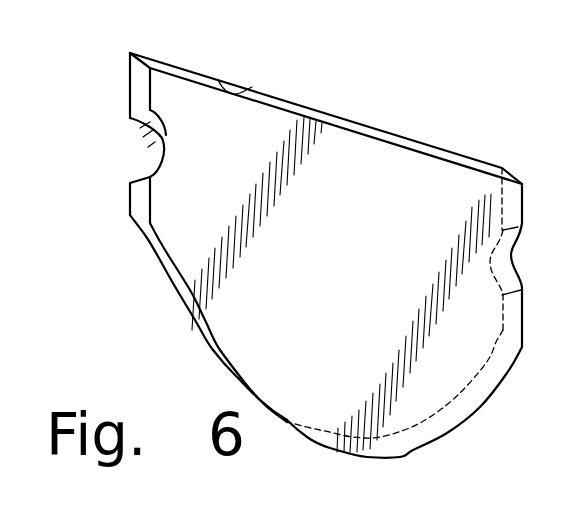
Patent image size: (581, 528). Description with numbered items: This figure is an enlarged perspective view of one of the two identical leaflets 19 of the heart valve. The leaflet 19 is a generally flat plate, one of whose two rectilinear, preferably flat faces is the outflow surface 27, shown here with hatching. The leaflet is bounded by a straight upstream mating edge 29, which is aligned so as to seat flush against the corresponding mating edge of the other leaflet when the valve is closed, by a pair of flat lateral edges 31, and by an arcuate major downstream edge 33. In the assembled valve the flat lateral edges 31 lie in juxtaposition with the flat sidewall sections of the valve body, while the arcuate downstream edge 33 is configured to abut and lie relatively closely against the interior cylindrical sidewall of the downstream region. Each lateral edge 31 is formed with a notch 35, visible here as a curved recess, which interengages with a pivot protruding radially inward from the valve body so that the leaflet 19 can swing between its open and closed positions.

The leaflet 19 is at (430, 94).
The outflow surface 27 is at (340, 286).
The upstream mating edge 29 is at (250, 86).
The lateral edge 31 is at (140, 84).
The arcuate major downstream edge 33 is at (167, 282).
The notch 35 is at (143, 150).